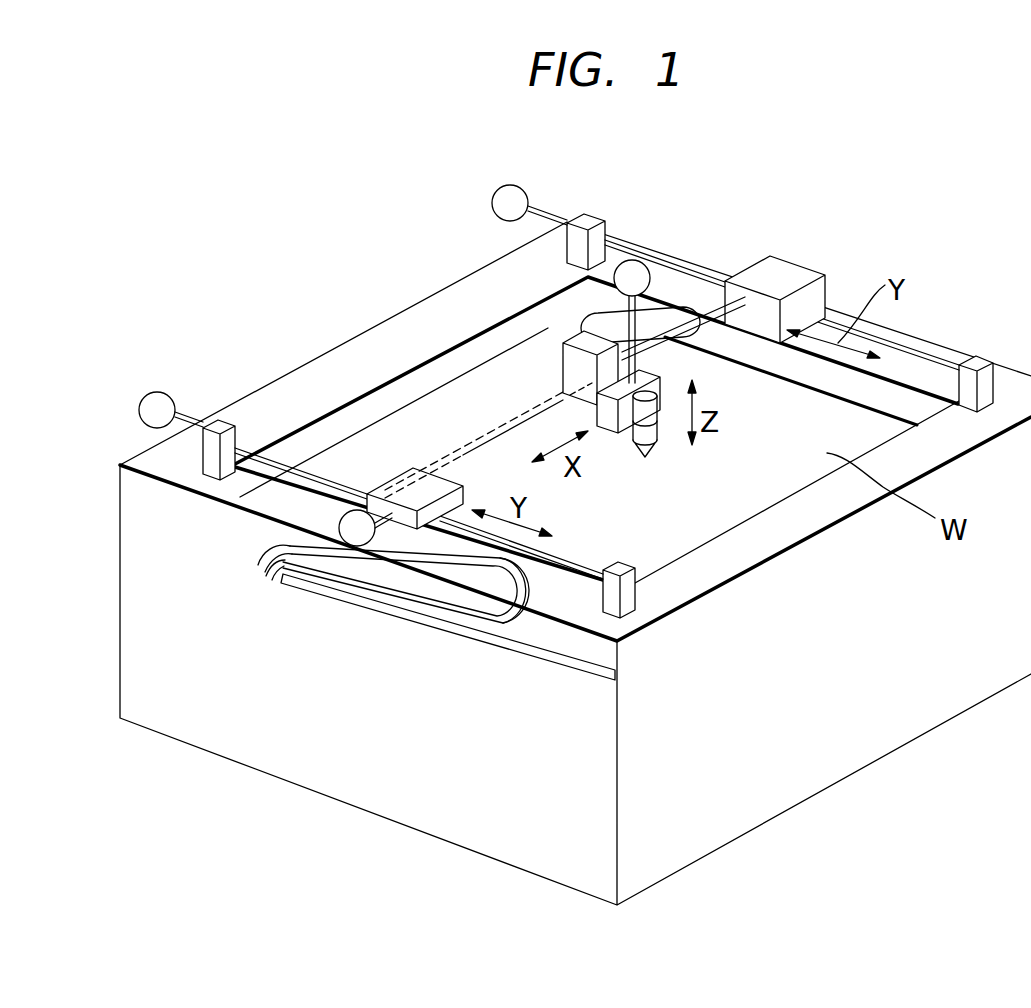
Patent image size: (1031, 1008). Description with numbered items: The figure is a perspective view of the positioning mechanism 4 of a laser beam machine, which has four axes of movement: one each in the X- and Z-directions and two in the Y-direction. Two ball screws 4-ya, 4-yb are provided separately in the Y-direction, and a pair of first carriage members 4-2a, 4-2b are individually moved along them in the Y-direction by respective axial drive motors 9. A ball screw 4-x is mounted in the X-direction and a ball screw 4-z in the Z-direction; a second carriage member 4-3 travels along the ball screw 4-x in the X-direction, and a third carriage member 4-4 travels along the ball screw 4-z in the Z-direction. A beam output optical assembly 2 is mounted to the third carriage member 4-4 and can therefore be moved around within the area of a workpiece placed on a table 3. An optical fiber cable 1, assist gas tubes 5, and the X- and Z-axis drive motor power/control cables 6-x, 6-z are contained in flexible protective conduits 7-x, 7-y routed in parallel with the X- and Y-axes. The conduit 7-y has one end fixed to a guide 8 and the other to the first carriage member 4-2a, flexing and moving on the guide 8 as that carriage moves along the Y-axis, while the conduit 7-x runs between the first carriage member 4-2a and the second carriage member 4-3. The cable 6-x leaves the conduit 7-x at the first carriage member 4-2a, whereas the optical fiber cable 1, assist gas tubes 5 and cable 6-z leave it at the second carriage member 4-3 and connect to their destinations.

The optical fiber cable 1 is at (580, 368).
The beam output optical assembly 2 is at (648, 433).
The table 3 is at (822, 432).
The positioning mechanism 4 is at (290, 342).
The assist gas tubes 5 is at (262, 561).
The X-axis drive motor power/control cable 6-x is at (253, 566).
The Z-axis drive motor power/control cable 6-z is at (263, 561).
The flexible protective conduit 7-x is at (722, 262).
The flexible protective conduit 7-y is at (388, 580).
The guide 8 is at (540, 650).
The axial drive motors 9 is at (499, 191).
The first carriage member 4-2a is at (404, 490).
The first carriage member 4-2b is at (790, 272).
The second carriage member 4-3 is at (562, 352).
The third carriage member 4-4 is at (607, 418).
The ball screw 4-x is at (493, 445).
The ball screw 4-ya is at (267, 466).
The ball screw 4-yb is at (612, 240).
The ball screw 4-z is at (650, 290).